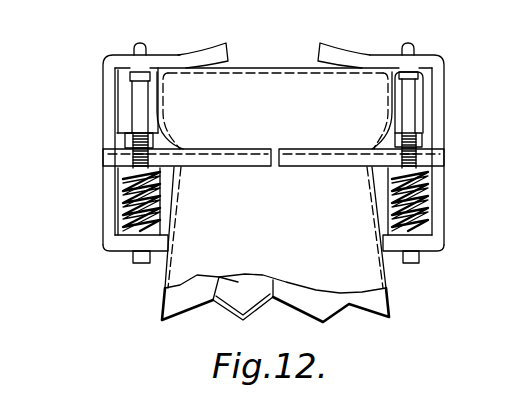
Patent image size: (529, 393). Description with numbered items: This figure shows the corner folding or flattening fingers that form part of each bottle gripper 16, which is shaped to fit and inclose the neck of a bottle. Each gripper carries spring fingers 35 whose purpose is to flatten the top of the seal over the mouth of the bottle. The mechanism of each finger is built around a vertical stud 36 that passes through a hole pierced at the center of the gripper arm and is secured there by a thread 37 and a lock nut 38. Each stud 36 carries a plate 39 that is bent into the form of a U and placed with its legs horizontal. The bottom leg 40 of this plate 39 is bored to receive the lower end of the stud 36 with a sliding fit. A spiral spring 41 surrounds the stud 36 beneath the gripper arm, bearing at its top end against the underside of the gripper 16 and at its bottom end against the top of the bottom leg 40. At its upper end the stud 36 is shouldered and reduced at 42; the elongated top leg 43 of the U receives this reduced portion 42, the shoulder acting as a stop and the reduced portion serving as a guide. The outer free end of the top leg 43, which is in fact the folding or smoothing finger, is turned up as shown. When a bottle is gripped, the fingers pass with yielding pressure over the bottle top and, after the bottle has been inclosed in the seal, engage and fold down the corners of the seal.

The gripper 16 is at (328, 161).
The spring fingers 35 is at (107, 100).
The vertical stud 36 is at (125, 174).
The thread 37 is at (133, 158).
The lock nut 38 is at (128, 141).
The plate 39 is at (117, 115).
The bottom leg 40 is at (122, 241).
The spiral spring 41 is at (123, 203).
The reduced portion 42 is at (133, 77).
The top leg 43 is at (147, 72).